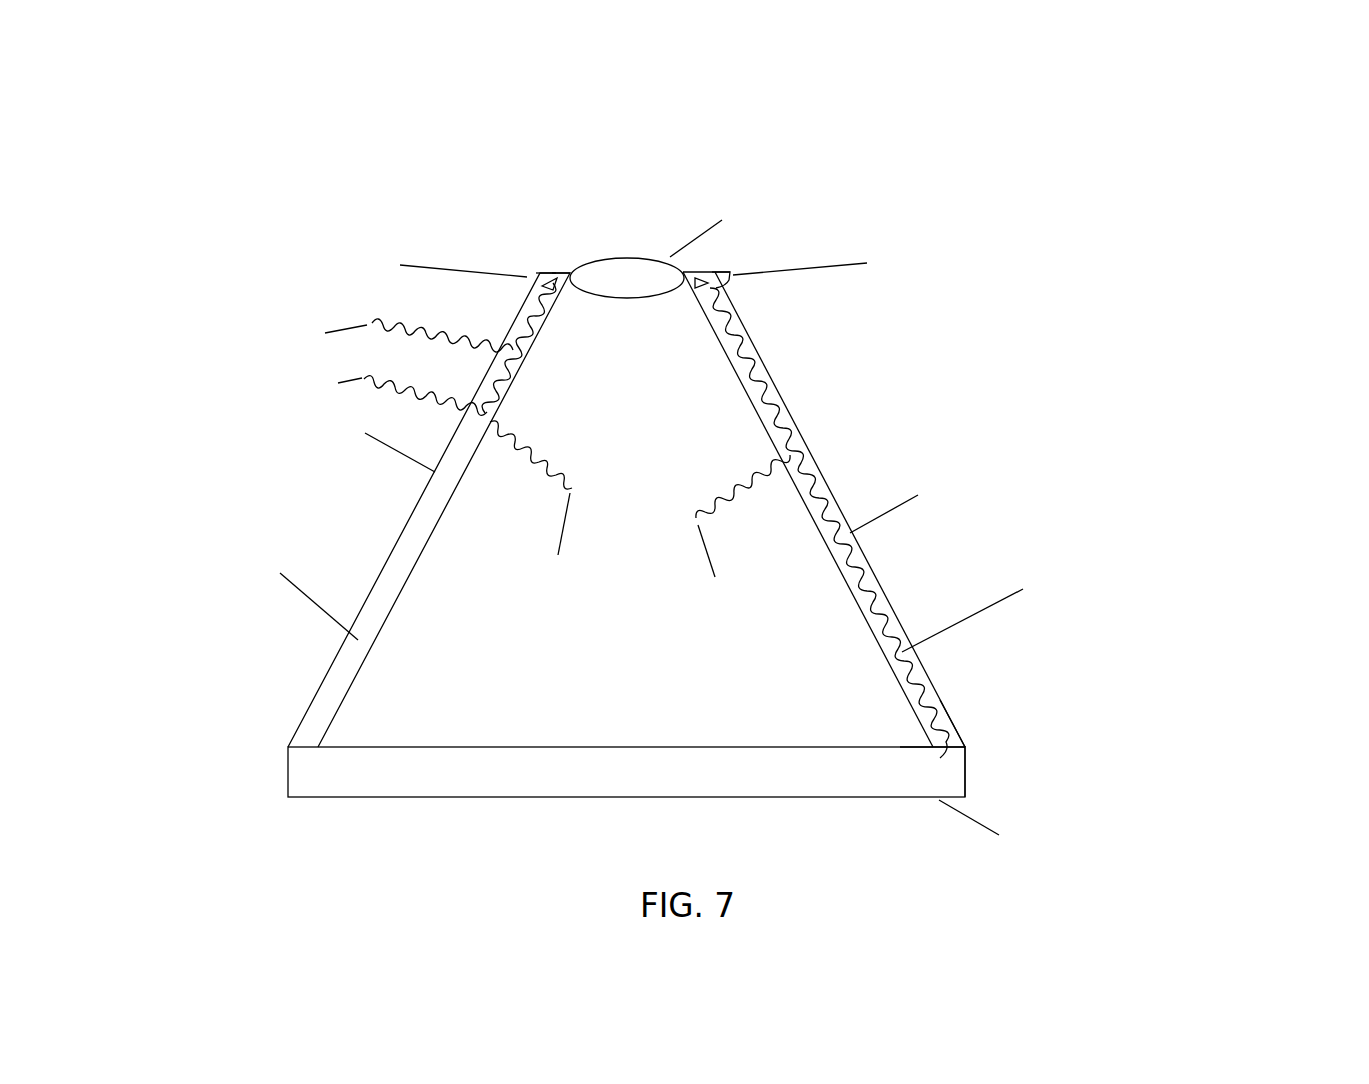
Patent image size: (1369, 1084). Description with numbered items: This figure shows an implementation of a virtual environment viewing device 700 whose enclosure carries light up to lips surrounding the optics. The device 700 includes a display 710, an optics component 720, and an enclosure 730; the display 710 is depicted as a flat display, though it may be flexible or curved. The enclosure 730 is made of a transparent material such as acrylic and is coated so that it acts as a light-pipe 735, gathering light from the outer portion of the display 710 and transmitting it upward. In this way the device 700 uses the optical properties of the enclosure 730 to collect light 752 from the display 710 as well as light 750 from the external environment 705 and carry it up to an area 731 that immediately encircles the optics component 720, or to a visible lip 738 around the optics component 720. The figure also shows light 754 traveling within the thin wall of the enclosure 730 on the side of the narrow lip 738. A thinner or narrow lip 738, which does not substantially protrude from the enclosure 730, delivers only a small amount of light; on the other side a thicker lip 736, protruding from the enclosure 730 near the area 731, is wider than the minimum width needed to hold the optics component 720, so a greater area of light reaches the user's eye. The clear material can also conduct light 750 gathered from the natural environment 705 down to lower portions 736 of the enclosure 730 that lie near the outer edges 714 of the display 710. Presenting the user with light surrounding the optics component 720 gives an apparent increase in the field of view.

The virtual environment viewing device 700 is at (1119, 158).
The external environment 705 is at (173, 389).
The display 710 is at (870, 803).
The outer edges of the display 714 is at (928, 772).
The optics component 720 is at (636, 250).
The enclosure 730 is at (777, 385).
The area immediately encircling the optics component 731 is at (513, 253).
The light-pipe 735 is at (921, 666).
The thicker lip 736 is at (727, 268).
The visible lip 738 is at (557, 262).
The light from the external environment 750 is at (375, 323).
The light from the display 752 is at (532, 441).
The light in thin wall 754 is at (533, 325).